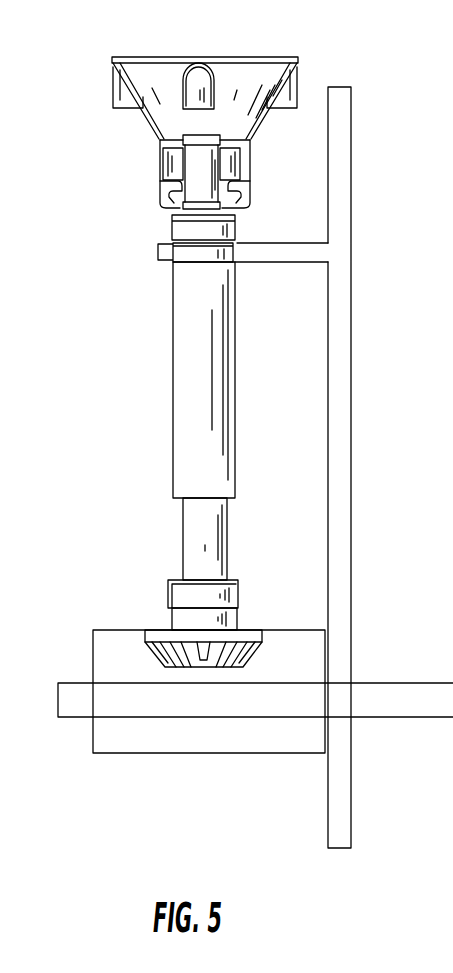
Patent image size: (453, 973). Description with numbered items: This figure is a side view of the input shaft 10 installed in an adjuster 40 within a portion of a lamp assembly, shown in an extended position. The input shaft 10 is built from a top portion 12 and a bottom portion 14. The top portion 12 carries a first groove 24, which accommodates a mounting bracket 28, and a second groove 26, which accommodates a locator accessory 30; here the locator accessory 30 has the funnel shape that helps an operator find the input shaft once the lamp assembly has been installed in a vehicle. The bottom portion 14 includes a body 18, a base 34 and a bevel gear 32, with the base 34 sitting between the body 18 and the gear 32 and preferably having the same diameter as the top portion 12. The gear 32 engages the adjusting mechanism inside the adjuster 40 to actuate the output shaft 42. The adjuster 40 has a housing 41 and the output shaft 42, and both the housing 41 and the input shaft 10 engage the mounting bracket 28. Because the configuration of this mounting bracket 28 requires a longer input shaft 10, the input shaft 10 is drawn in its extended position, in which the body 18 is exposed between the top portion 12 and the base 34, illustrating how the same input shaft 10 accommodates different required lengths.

The input shaft 10 is at (102, 271).
The top portion 12 is at (180, 360).
The bottom portion 14 is at (162, 549).
The body 18 is at (215, 530).
The first groove 24 is at (160, 254).
The second groove 26 is at (173, 216).
The mounting bracket 28 is at (343, 189).
The locator accessory 30 is at (137, 92).
The bevel gear 32 is at (150, 651).
The base 34 is at (237, 617).
The adjuster 40 is at (87, 731).
The housing 41 is at (190, 733).
The output shaft 42 is at (390, 698).